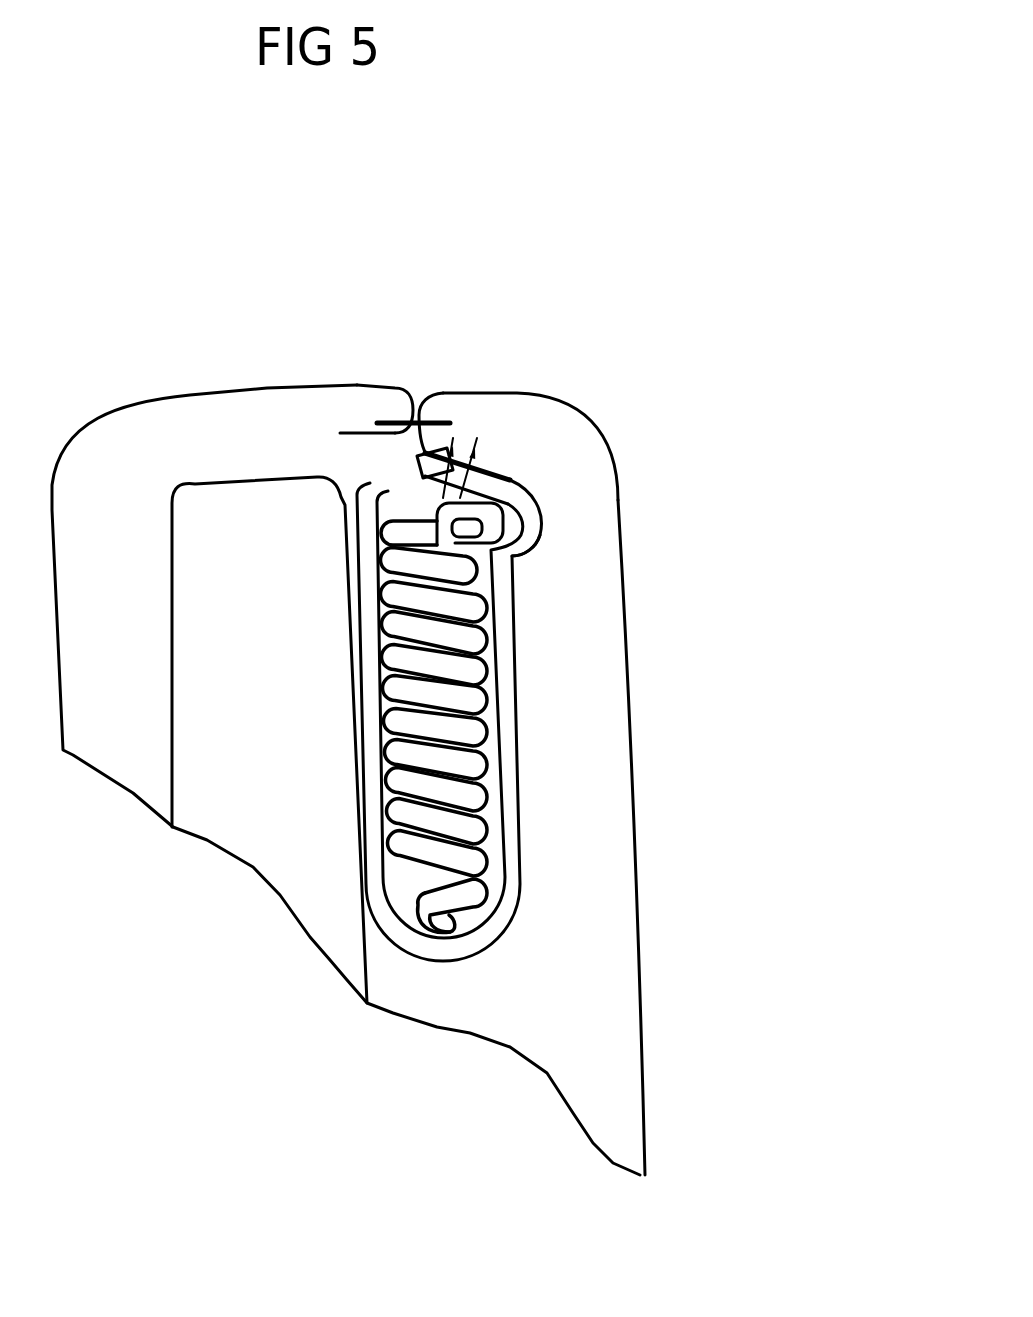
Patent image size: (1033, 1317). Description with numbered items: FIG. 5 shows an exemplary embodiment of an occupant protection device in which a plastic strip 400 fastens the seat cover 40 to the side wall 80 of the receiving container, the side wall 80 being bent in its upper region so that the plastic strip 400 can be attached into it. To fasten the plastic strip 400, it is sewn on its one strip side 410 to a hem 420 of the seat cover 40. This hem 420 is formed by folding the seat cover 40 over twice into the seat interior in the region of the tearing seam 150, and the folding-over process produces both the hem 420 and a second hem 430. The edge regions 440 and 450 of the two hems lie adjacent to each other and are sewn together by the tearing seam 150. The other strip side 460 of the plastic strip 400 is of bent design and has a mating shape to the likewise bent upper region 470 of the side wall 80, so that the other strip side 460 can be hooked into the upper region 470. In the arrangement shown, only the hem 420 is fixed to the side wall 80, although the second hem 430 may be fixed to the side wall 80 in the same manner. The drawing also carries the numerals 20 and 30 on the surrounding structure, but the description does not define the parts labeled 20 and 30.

The first housing part 20 is at (277, 807).
The second housing part 30 is at (587, 768).
The seat cover 40 is at (620, 437).
The side wall 80 is at (523, 847).
The tearing seam 150 is at (420, 380).
The plastic strip 400 is at (555, 527).
The one strip side 410 is at (412, 462).
The hem 420 is at (433, 440).
The second hem 430 is at (357, 433).
The edge region 440 is at (403, 380).
The edge region 450 is at (417, 387).
The other strip side 460 is at (513, 543).
The upper region 470 is at (366, 569).